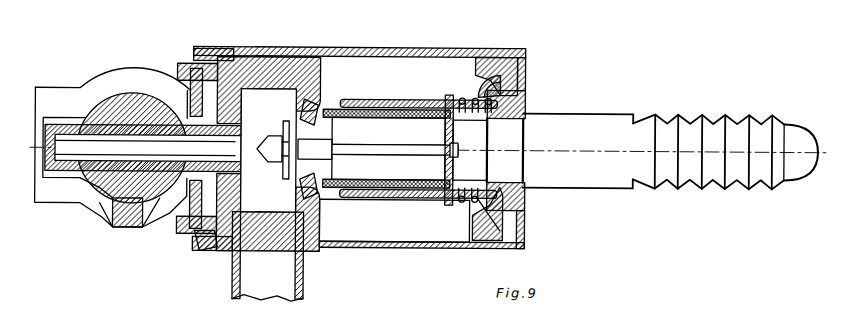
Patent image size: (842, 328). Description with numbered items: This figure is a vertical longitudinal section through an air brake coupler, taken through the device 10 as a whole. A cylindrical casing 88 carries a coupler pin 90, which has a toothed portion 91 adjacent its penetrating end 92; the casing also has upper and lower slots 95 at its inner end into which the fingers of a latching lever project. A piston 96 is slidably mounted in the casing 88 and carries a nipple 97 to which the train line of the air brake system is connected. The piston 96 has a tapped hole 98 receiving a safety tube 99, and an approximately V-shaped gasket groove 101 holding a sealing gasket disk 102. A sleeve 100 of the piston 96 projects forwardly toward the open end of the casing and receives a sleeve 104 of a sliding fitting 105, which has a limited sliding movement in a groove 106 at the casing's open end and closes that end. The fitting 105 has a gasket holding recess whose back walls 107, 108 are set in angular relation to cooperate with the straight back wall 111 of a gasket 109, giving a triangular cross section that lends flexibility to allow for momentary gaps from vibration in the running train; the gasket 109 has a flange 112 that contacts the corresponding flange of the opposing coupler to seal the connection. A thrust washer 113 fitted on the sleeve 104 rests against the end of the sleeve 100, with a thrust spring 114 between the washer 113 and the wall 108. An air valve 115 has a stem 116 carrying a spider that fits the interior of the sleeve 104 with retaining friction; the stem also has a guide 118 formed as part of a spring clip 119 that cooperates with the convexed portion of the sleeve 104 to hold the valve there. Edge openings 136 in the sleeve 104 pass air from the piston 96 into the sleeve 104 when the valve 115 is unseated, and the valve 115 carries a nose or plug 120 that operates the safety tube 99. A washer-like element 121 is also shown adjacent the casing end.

The body 10 is at (790, 148).
The safety tube 99 is at (118, 95).
The upper and lower slots 95 is at (186, 65).
The plate 121 is at (212, 56).
The nose or plug 120 is at (196, 240).
The piston 96 is at (292, 58).
The tapped hole 98 is at (246, 104).
The nipple 97 is at (272, 288).
The air valve 115 is at (280, 160).
The spring clip 119 is at (290, 112).
The edge openings 136 is at (332, 148).
The cylindrical casing 88 is at (400, 48).
The sealing gasket disk 102 is at (340, 100).
The sleeve 100 is at (348, 110).
The sleeve 104 is at (396, 120).
The stem 116 is at (400, 158).
The guide 118 is at (366, 155).
The thrust washer 113 is at (446, 204).
The thrust spring 114 is at (458, 126).
The back wall 107 is at (480, 98).
The back wall 108 is at (472, 98).
The sliding fitting 105 is at (520, 62).
The groove 106 is at (490, 75).
The gasket 109 is at (526, 88).
The flange 112 is at (527, 205).
The back wall 111 is at (476, 216).
The gasket groove 101 is at (328, 210).
The coupler pin 90 is at (600, 106).
The toothed portion 91 is at (706, 118).
The penetrating end 92 is at (796, 122).